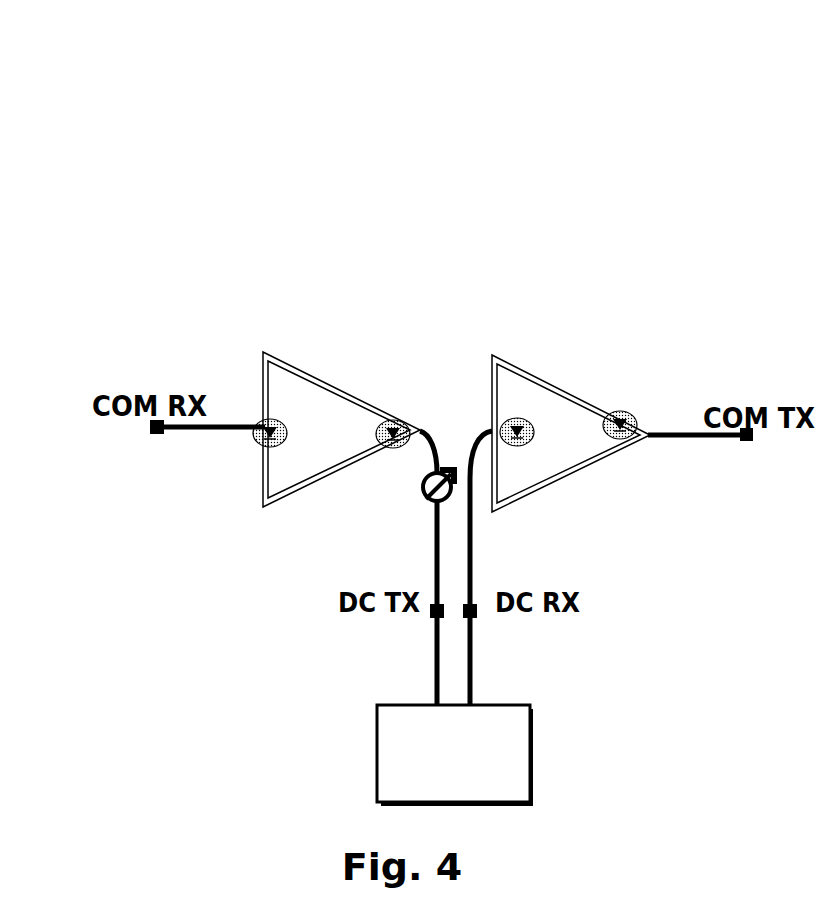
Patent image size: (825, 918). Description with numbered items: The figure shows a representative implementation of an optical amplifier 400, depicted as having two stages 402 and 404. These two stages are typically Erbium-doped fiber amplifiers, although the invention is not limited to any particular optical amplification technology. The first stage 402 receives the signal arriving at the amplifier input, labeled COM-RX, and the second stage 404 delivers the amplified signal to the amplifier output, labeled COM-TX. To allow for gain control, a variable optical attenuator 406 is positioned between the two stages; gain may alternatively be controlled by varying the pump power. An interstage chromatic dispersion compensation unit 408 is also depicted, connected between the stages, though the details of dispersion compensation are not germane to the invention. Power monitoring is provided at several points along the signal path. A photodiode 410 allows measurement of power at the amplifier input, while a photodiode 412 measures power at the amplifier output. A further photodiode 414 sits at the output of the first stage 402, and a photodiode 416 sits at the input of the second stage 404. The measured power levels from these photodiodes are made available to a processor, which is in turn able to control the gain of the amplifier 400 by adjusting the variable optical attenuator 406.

The amplifier 400 is at (122, 82).
The first stage 402 is at (353, 386).
The second stage 404 is at (572, 392).
The variable optical attenuator 406 is at (427, 500).
The interstage chromatic dispersion compensation unit 408 is at (374, 738).
The photodiode 410 is at (260, 447).
The photodiode 412 is at (414, 470).
The photodiode 414 is at (500, 428).
The photodiode 416 is at (633, 412).